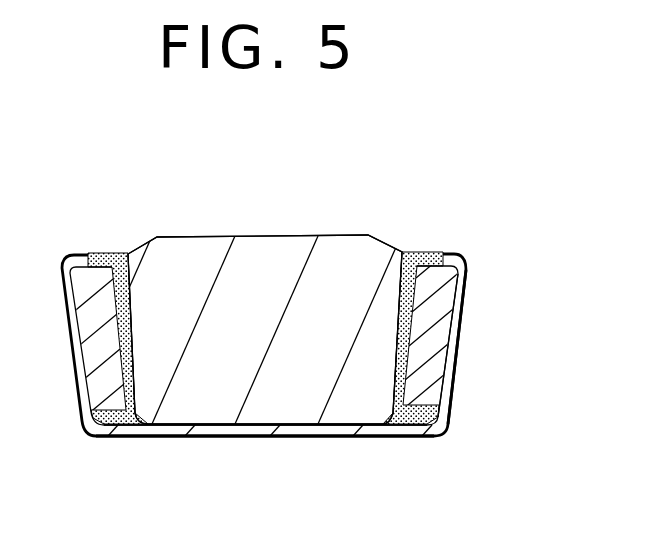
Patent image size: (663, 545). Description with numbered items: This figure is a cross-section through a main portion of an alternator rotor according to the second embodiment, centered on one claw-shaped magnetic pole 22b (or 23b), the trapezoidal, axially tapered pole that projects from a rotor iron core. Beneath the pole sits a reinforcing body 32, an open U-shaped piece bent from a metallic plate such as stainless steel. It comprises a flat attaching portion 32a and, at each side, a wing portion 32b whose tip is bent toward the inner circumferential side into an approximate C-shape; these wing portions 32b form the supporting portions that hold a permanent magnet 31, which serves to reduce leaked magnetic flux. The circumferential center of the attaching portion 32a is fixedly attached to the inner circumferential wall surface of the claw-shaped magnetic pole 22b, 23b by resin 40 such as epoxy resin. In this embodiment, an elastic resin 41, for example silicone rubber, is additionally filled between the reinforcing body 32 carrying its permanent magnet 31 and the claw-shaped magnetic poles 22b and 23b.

The claw-shaped magnetic pole 22b is at (278, 253).
The claw-shaped magnetic pole 23b is at (265, 292).
The permanent magnet 31 is at (438, 308).
The reinforcing body 32 is at (478, 258).
The attaching portion 32a is at (337, 432).
The wing portion 32b is at (453, 333).
The resin 40 is at (442, 385).
The resin having elasticity 41 is at (115, 430).